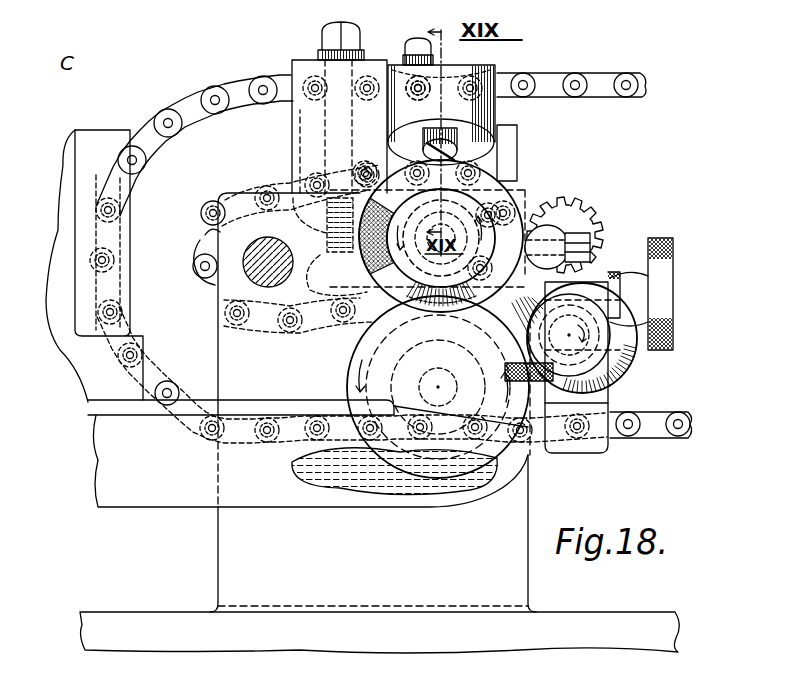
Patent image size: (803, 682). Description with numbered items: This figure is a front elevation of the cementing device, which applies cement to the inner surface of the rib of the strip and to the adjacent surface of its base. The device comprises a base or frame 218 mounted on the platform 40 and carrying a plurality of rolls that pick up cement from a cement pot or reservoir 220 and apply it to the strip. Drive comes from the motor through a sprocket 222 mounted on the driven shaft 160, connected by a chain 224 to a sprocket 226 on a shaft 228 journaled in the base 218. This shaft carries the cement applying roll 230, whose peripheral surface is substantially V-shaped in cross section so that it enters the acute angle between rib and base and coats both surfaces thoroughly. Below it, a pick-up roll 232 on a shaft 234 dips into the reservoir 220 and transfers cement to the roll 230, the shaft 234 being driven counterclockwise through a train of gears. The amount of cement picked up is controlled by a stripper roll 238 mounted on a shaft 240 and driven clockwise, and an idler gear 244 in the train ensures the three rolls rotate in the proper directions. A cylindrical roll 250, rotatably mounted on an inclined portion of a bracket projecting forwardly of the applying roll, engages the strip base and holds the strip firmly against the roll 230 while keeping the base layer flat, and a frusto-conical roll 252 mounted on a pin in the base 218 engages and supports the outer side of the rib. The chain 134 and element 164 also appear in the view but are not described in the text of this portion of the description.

The platform 40 is at (663, 623).
The drive chain 134 is at (604, 68).
The driven shaft 160 is at (257, 238).
The chain 164 is at (182, 96).
The base or frame 218 is at (226, 551).
The cement pot or reservoir 220 is at (100, 452).
The sprocket 222 is at (211, 302).
The chain 224 is at (198, 252).
The sprocket 226 is at (361, 260).
The shaft 228 is at (514, 178).
The cement applying roll 230 is at (512, 196).
The pick-up roll 232 is at (345, 361).
The shaft 234 is at (445, 367).
The stripper roll 238 is at (612, 372).
The shaft 240 is at (630, 352).
The idler gear 244 is at (585, 215).
The cylindrical roll 250 is at (498, 113).
The frusto-conical roll 252 is at (392, 160).